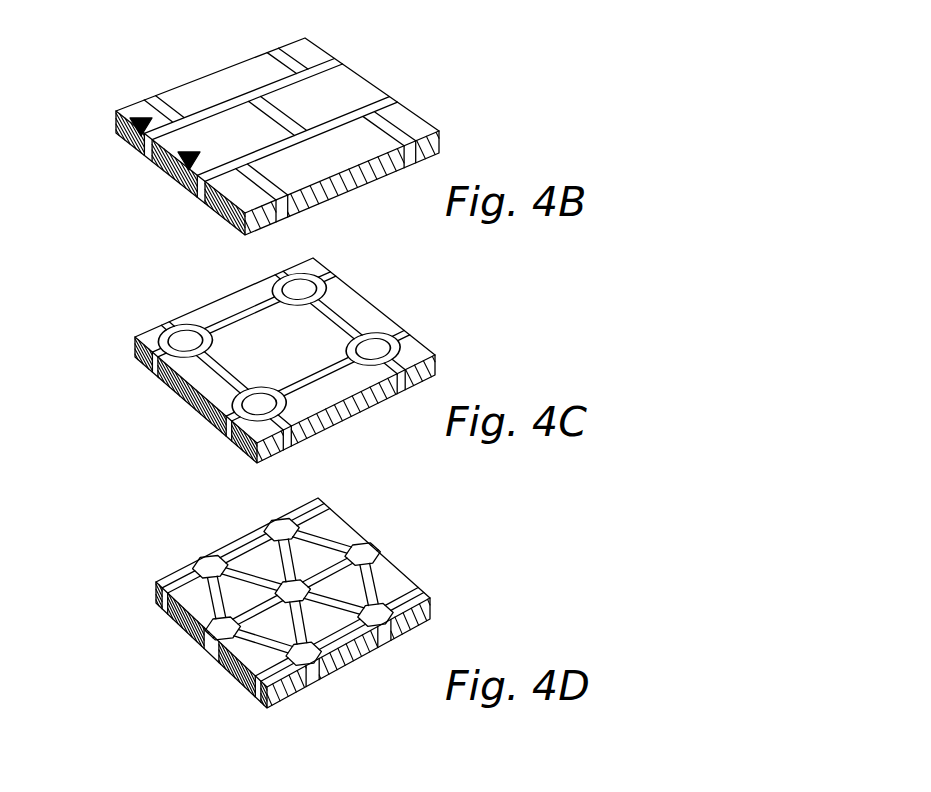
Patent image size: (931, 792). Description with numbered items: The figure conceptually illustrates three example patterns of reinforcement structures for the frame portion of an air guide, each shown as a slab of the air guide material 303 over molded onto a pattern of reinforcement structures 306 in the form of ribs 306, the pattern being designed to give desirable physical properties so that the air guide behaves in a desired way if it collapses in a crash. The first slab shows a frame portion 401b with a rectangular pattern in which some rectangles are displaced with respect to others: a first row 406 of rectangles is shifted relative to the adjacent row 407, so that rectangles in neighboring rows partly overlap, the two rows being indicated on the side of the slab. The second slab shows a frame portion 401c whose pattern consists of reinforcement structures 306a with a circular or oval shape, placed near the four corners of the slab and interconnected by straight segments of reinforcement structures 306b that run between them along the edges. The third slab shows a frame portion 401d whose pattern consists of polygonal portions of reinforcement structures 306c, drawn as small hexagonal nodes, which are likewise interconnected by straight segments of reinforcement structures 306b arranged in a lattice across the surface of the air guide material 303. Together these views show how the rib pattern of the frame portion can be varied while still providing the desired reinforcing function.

In FIG. 4B, the air guide material 303 is at (413, 123).
In FIG. 4C, the air guide material 303 is at (310, 327).
In FIG. 4D, the air guide material 303 is at (350, 592).
In FIG. 4B, the reinforcement structures 306 is at (322, 63).
In FIG. 4C, the circular or oval reinforcement structures 306a is at (317, 273).
In FIG. 4C, the straight segments of reinforcement structures 306b is at (238, 307).
In FIG. 4D, the straight segments of reinforcement structures 306b is at (248, 545).
In FIG. 4D, the polygonal portions of reinforcement structures 306c is at (187, 563).
In FIG. 4B, the frame portion 401b is at (309, 100).
In FIG. 4C, the frame portion 401c is at (289, 321).
In FIG. 4D, the frame portion 401d is at (243, 557).
In FIG. 4B, the first row of rectangles 406 is at (121, 138).
In FIG. 4B, the adjacent row of rectangles 407 is at (172, 177).